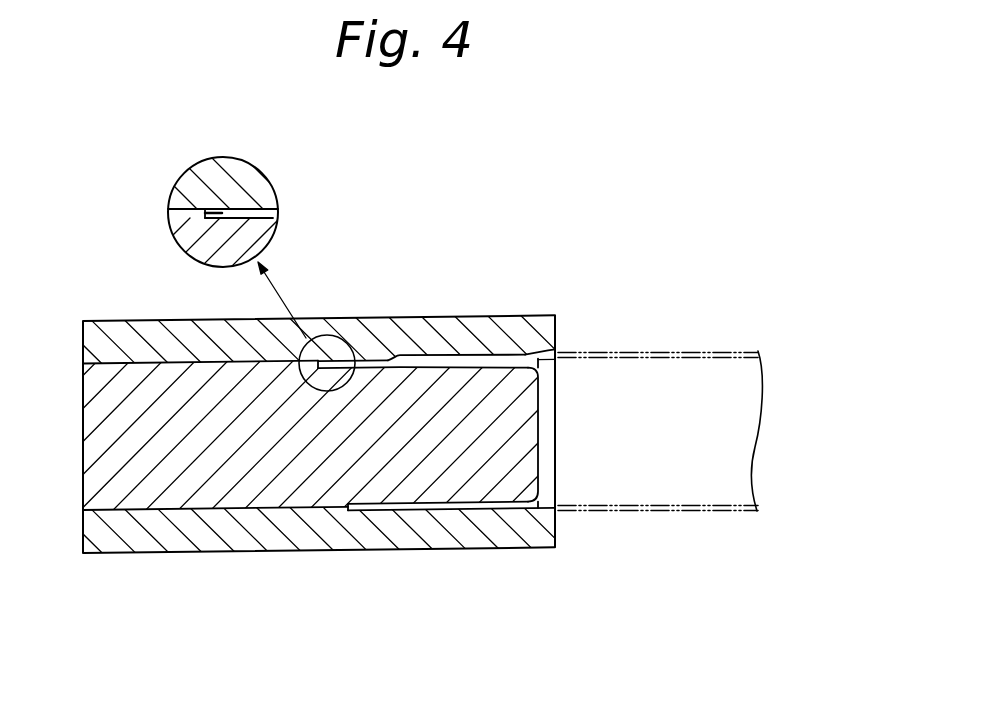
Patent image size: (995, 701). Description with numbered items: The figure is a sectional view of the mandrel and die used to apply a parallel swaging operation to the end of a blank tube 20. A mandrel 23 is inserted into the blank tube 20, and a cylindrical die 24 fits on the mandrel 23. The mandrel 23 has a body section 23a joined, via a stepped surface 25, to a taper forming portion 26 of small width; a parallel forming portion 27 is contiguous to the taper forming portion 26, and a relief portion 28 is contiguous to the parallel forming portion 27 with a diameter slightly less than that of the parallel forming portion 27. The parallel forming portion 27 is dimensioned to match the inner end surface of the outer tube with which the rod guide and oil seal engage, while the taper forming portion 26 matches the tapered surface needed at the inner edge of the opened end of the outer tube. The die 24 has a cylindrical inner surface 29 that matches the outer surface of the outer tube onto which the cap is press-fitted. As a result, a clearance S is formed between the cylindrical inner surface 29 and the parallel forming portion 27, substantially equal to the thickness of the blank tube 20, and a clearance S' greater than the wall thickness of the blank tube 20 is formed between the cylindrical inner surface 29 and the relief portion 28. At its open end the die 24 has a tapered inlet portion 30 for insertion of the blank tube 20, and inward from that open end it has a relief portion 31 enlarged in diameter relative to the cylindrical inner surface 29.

The blank tube 20 is at (661, 509).
The mandrel 23 is at (177, 360).
The body section 23a is at (217, 493).
The cylindrical die 24 is at (165, 565).
The stepped surface 25 is at (210, 211).
The taper forming portion 26 is at (224, 211).
The parallel forming portion 27 is at (276, 212).
The relief portion 28 is at (428, 361).
The cylindrical inner surface 29 is at (269, 512).
The tapered inlet portion 30 is at (552, 357).
The relief portion 31 is at (469, 371).
The clearance S is at (246, 255).
The clearance S' is at (438, 560).